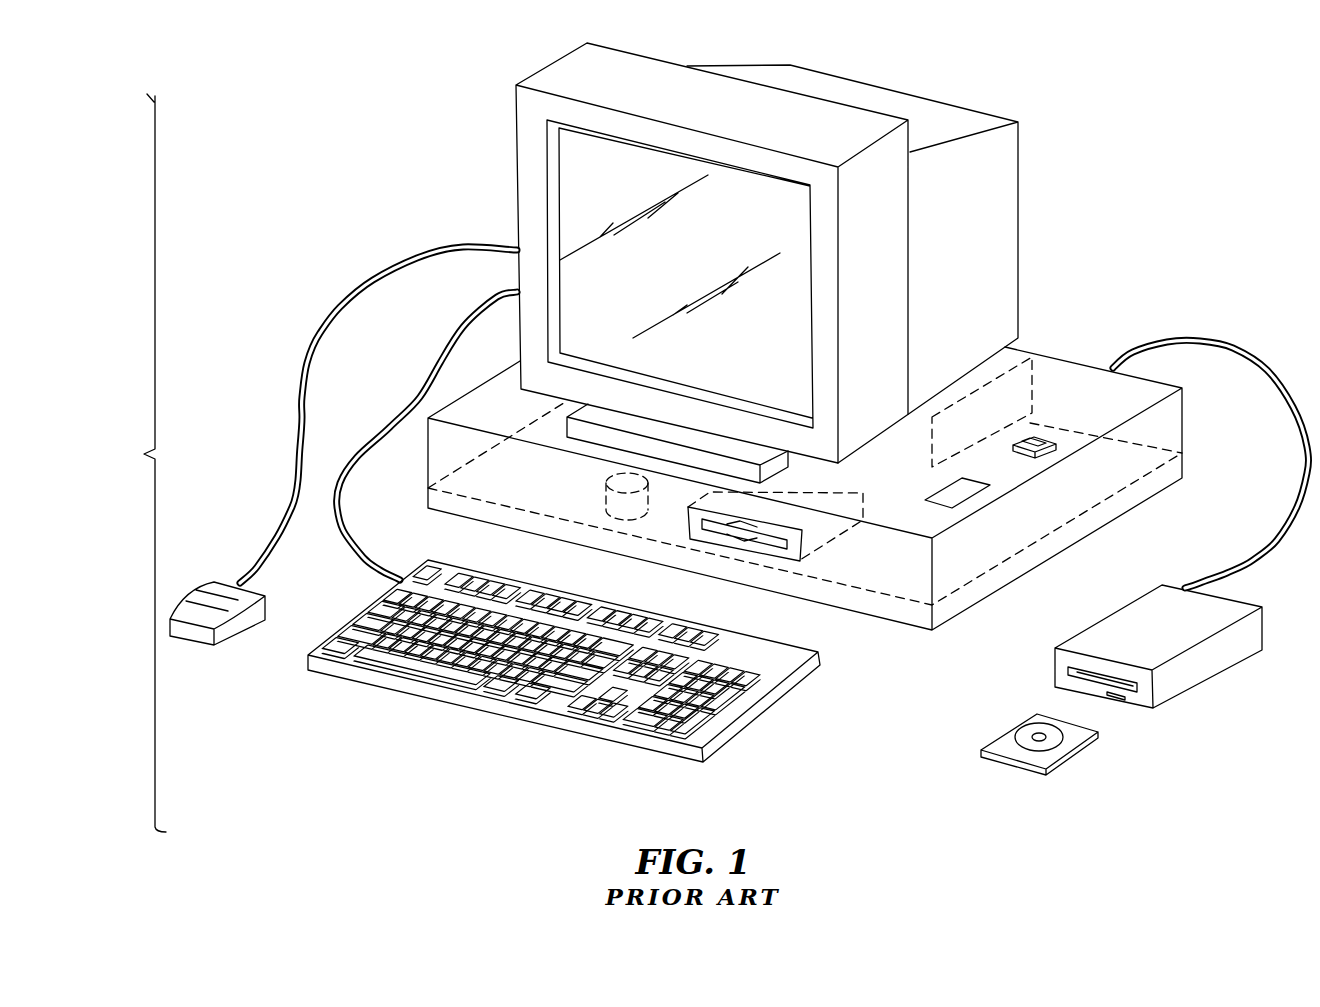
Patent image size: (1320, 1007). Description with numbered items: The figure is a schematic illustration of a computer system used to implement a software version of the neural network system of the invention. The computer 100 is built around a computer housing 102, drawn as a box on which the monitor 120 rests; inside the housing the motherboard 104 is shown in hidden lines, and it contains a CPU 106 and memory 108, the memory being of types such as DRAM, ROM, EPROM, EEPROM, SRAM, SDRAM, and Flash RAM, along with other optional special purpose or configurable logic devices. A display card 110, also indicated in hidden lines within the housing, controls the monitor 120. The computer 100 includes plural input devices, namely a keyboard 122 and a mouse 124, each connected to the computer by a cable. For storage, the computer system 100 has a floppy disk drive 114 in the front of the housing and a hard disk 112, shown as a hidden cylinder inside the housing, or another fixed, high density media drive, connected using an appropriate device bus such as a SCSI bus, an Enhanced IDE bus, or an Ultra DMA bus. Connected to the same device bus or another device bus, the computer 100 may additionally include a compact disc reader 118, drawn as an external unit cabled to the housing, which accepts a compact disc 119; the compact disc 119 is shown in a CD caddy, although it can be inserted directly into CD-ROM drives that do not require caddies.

The computer 100 is at (137, 463).
The computer housing 102 is at (1083, 370).
The motherboard 104 is at (1084, 437).
The CPU 106 is at (972, 506).
The memory 108 is at (1040, 435).
The display card 110 is at (1007, 372).
The hard disk 112 is at (605, 490).
The floppy disk drive 114 is at (800, 553).
The compact disc reader 118 is at (1203, 670).
The compact disc 119 is at (1054, 741).
The monitor 120 is at (890, 98).
The keyboard 122 is at (777, 707).
The mouse 124 is at (200, 588).